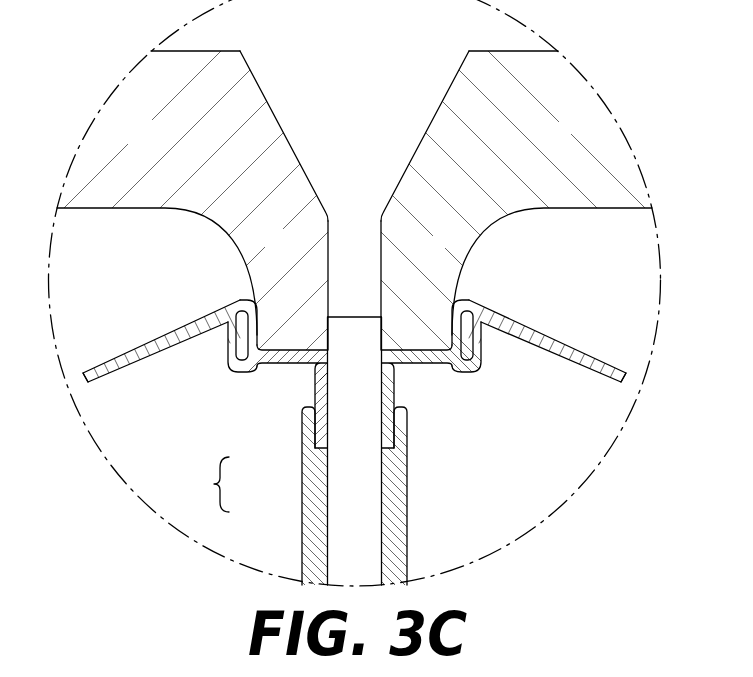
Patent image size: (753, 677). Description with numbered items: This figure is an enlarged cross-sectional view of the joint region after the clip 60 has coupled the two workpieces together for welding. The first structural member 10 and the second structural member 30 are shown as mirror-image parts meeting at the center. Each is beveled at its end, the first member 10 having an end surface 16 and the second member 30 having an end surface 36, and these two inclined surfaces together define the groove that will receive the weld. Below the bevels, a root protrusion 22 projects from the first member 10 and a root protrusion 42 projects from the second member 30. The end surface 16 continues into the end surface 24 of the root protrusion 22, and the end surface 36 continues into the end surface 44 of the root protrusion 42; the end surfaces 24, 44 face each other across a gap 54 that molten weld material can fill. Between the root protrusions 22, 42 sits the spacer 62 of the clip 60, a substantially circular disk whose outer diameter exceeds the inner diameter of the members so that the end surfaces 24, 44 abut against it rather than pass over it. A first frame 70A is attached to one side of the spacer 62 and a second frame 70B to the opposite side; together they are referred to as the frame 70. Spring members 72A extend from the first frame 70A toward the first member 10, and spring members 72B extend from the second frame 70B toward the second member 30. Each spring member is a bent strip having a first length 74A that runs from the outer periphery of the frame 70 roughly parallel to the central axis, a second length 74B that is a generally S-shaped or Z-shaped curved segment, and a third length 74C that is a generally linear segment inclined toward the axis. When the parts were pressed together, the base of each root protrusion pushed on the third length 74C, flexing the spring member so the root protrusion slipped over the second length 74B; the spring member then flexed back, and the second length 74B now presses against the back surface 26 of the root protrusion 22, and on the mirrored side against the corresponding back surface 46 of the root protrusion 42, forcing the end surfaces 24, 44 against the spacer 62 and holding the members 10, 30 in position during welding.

The first structural member 10 is at (153, 145).
The end surface 16 is at (254, 79).
The root protrusion 22 is at (290, 256).
The end surface 24 is at (331, 222).
The back surface 26 is at (243, 262).
The second structural member 30 is at (568, 148).
The end surface 36 is at (457, 79).
The root protrusion 42 is at (442, 261).
The end surface 44 is at (378, 222).
The curved surface of second body 46 is at (466, 262).
The gap 54 is at (348, 210).
The clip 60 is at (142, 459).
The spacer 62 is at (357, 365).
The frame 70 is at (213, 484).
The first frame 70A is at (302, 449).
The second frame 70B is at (407, 481).
The spring member 72A is at (154, 365).
The spring member 72B is at (565, 370).
The first length 74A is at (257, 366).
The second length 74B is at (228, 360).
The third length 74C is at (135, 346).